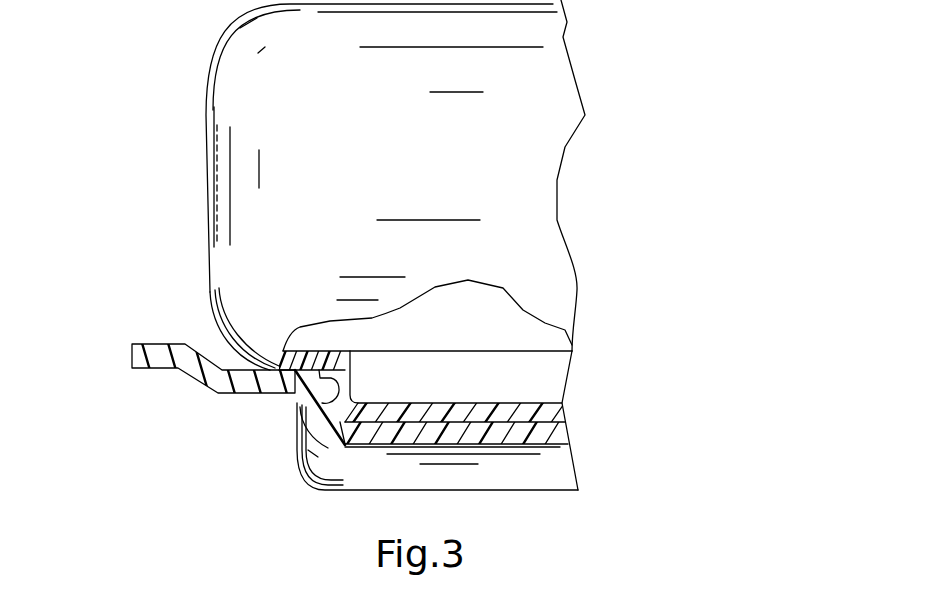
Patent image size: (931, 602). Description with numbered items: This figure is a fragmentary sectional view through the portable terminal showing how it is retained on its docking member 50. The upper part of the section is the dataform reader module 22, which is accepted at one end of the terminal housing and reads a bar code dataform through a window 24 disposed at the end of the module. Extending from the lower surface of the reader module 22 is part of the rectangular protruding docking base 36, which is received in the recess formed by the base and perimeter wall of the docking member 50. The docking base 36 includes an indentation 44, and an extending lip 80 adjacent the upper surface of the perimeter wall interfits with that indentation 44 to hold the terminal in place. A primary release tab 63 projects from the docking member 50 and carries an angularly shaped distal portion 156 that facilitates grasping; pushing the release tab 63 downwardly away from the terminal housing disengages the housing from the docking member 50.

The dataform reader module 22 is at (227, 273).
The window 24 is at (212, 189).
The docking base 36 is at (520, 413).
The indentations 44 is at (354, 405).
The docking member 50 is at (478, 473).
The primary release tab 63 is at (176, 392).
The extending lip 80 is at (306, 393).
The angularly shaped distal portion 156 is at (178, 353).